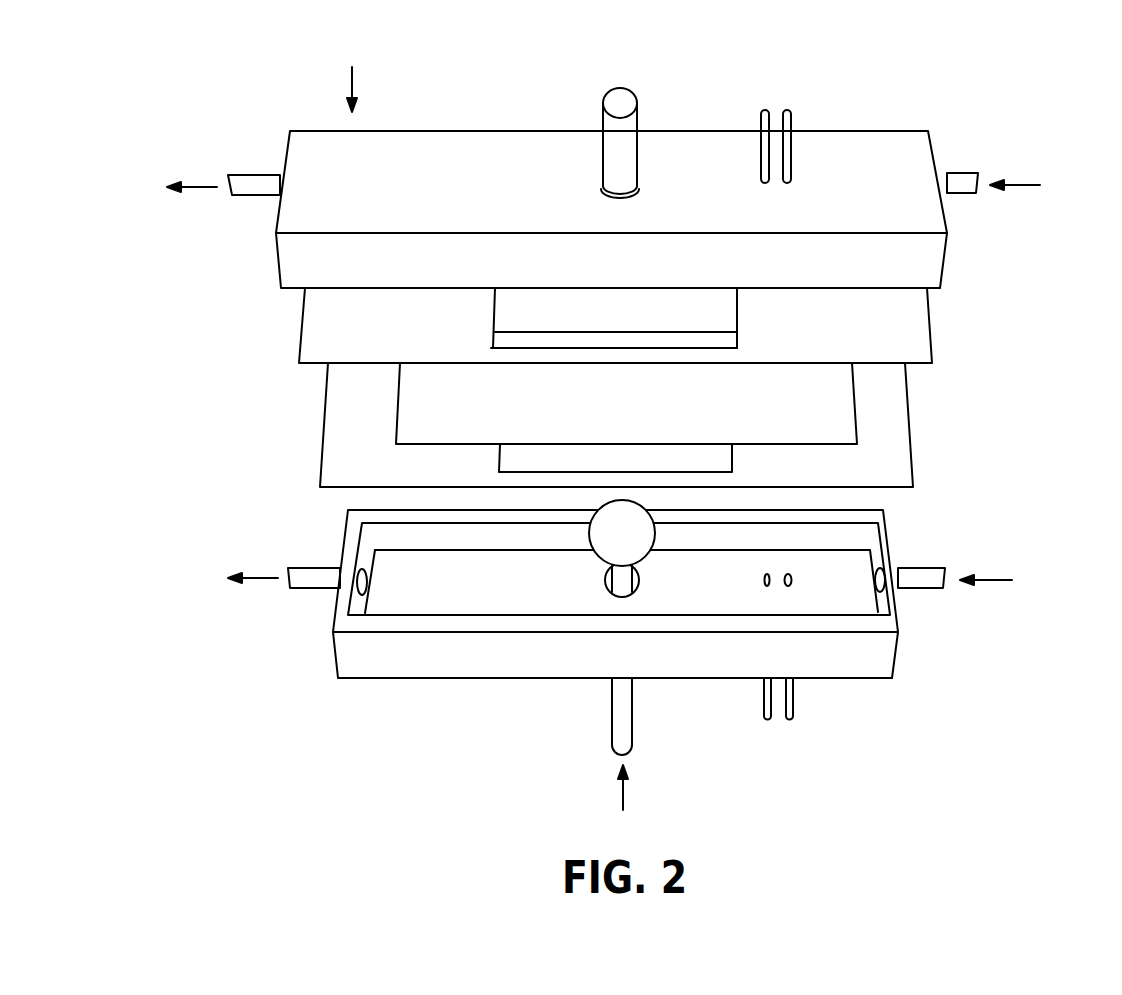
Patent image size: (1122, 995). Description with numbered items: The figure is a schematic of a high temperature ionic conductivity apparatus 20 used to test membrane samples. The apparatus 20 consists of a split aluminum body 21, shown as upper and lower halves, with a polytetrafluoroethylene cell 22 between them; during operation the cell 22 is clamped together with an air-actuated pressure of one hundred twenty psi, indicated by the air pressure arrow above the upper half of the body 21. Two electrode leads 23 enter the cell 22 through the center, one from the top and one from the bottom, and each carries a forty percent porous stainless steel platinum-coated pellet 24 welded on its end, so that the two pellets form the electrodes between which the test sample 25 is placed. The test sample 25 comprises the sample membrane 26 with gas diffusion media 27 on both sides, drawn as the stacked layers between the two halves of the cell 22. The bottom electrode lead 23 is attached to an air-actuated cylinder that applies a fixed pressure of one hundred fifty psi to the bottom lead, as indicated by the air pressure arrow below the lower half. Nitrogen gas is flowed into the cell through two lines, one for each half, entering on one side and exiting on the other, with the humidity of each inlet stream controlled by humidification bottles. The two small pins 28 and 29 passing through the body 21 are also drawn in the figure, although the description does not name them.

The high temperature ionic conductivity apparatus 20 is at (597, 440).
The split aluminum body 21 is at (337, 262).
The polytetrafluoroethylene cell 22 is at (335, 342).
The electrode lead 23 is at (603, 108).
The Pt coated pellet 24 is at (655, 535).
The test sample 25 is at (747, 397).
The sample membrane 26 is at (857, 388).
The gas diffusion media 27 is at (857, 408).
The thermocouple pin 28 is at (763, 120).
The thermocouple pin 29 is at (792, 120).